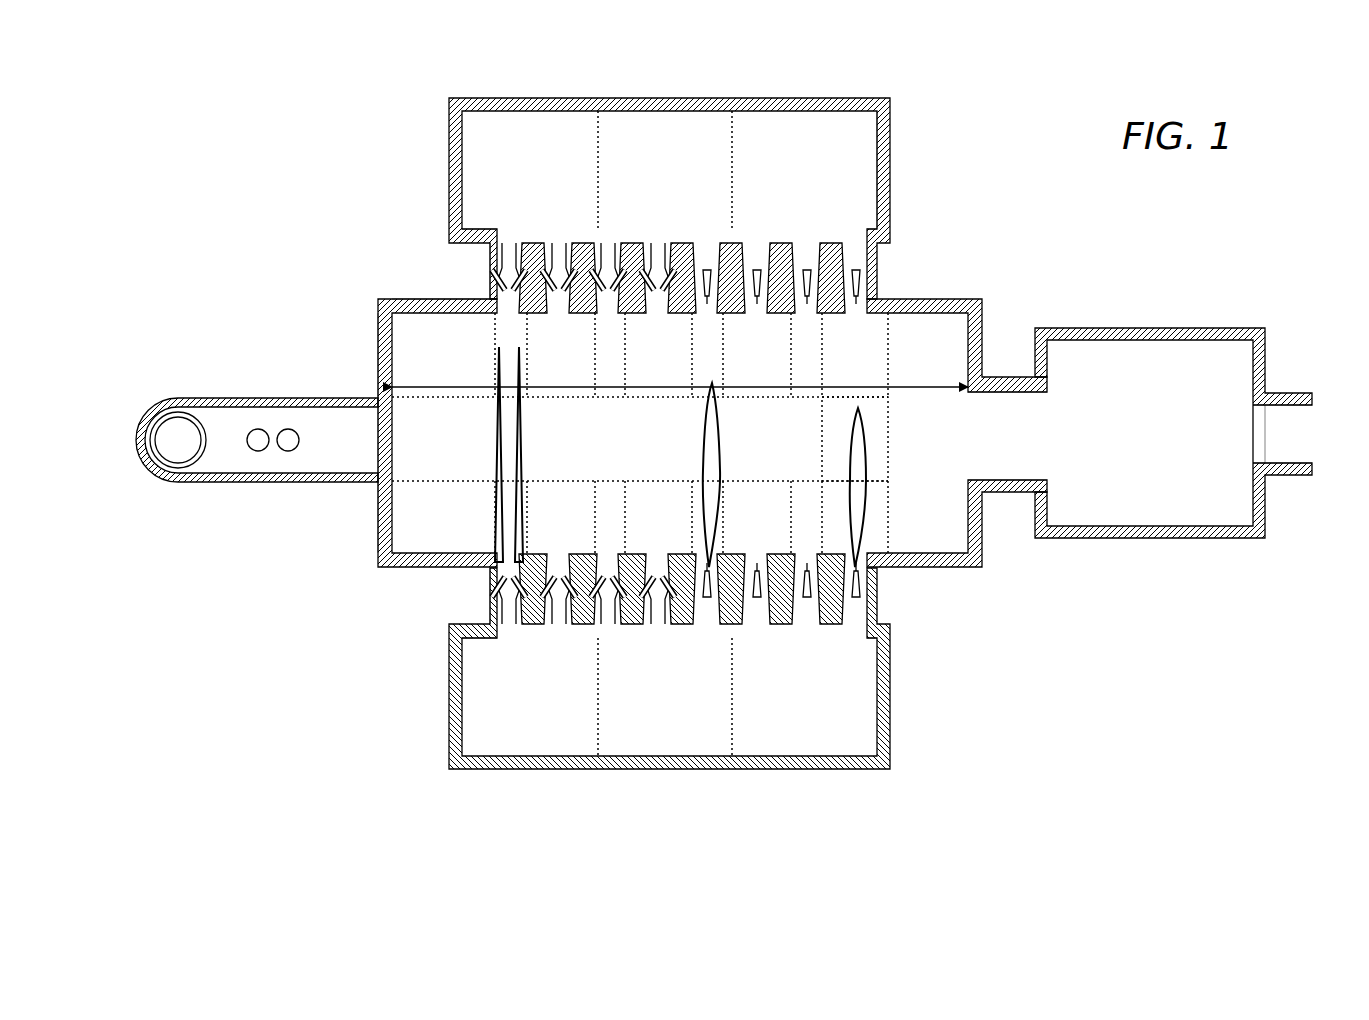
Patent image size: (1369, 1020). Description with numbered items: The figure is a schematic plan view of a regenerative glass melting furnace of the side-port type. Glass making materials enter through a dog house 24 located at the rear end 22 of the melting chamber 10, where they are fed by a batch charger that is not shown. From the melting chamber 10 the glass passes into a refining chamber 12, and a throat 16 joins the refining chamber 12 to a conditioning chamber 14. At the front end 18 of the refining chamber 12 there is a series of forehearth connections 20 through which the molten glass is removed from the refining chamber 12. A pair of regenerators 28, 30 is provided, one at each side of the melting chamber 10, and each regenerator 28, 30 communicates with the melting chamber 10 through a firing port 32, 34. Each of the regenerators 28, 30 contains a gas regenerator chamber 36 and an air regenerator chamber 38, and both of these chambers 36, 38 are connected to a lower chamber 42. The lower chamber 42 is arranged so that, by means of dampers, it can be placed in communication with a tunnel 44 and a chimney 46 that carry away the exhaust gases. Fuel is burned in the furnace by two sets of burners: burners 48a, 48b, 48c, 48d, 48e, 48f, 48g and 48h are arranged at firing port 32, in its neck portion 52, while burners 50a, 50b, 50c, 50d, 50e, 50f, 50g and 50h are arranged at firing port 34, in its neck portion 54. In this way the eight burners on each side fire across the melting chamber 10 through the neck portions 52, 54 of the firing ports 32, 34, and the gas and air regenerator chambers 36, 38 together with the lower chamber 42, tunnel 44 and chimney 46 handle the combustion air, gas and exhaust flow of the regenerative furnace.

The melting chamber 10 is at (409, 540).
The refining chamber 12 is at (958, 548).
The conditioning chamber 14 is at (1158, 488).
The throat 16 is at (1003, 462).
The front end 18 is at (1265, 520).
The forehearth connections 20 is at (1291, 391).
The rear end 22 is at (378, 517).
The dog house 24 is at (400, 340).
The regenerator 28 is at (893, 98).
The regenerator 30 is at (892, 697).
The firing port 32 is at (510, 238).
The firing port 34 is at (510, 627).
The gas regenerator chamber 36 is at (840, 188).
The air regenerator chamber 38 is at (853, 160).
The lower chamber 42 is at (803, 393).
The tunnel 44 is at (305, 426).
The chimney 46 is at (173, 426).
The burner 48a is at (495, 283).
The burner 48b is at (553, 300).
The burner 48c is at (607, 313).
The burner 48d is at (662, 300).
The burner 48e is at (705, 392).
The burner 48f is at (755, 300).
The burner 48g is at (800, 305).
The burner 48h is at (862, 278).
The burner 50a is at (497, 575).
The burner 50b is at (556, 566).
The burner 50c is at (612, 567).
The burner 50d is at (662, 566).
The burner 50e is at (730, 547).
The burner 50f is at (758, 566).
The burner 50g is at (805, 567).
The burner 50h is at (866, 602).
The neck portion 52 is at (511, 313).
The neck portion 54 is at (492, 600).